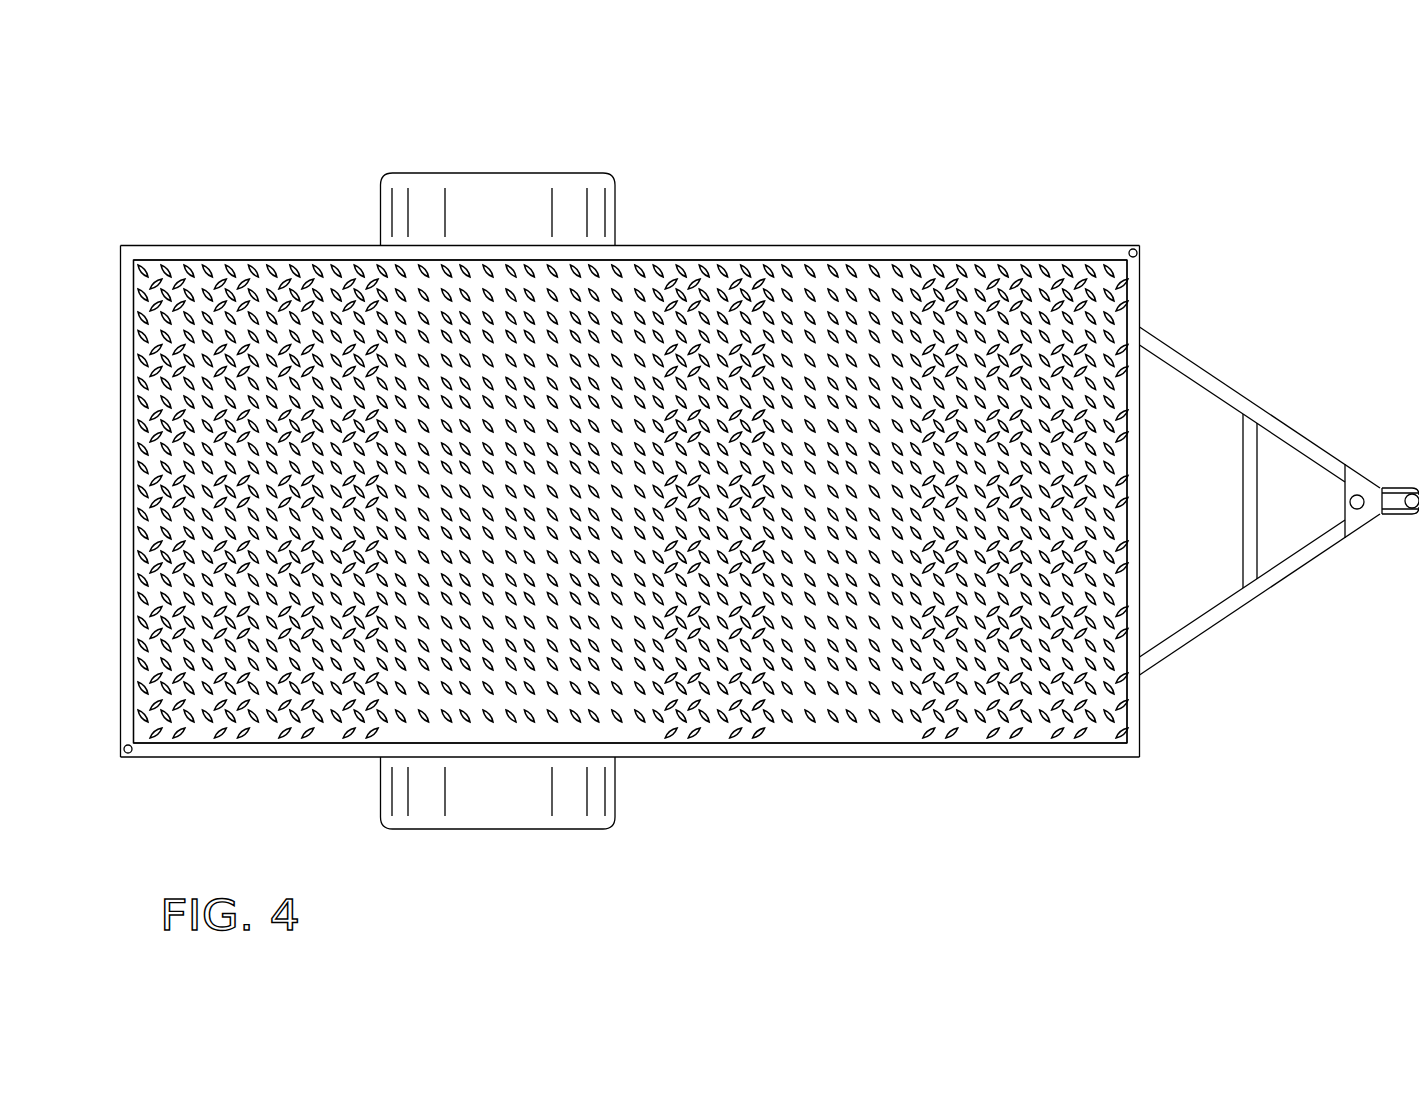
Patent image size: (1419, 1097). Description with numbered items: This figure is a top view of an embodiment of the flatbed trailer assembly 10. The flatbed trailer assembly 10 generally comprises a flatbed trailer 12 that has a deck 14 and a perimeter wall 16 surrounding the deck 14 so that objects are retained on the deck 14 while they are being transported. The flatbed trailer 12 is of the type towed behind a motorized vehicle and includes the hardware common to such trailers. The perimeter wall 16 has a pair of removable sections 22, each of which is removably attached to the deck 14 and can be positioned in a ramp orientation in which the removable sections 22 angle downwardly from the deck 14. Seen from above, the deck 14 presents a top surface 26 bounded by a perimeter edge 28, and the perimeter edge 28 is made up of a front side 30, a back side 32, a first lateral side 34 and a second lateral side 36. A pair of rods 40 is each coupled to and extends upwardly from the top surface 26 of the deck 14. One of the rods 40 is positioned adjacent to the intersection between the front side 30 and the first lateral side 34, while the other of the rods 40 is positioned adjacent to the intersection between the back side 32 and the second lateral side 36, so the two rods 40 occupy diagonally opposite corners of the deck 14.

The flatbed trailer assembly 10 is at (953, 150).
The flatbed trailer 12 is at (1155, 218).
The deck 14 is at (852, 302).
The perimeter wall 16 is at (810, 263).
The removable sections 22 is at (135, 308).
The top surface 26 is at (323, 287).
The perimeter edge 28 is at (223, 247).
The front side 30 is at (1140, 403).
The back side 32 is at (120, 497).
The first lateral side 34 is at (660, 247).
The second lateral side 36 is at (800, 760).
The rods 40 is at (1135, 275).